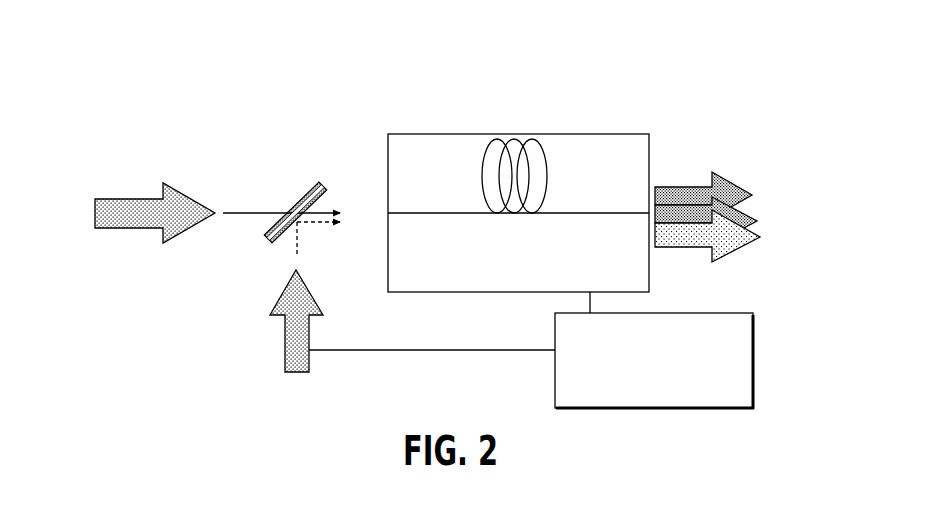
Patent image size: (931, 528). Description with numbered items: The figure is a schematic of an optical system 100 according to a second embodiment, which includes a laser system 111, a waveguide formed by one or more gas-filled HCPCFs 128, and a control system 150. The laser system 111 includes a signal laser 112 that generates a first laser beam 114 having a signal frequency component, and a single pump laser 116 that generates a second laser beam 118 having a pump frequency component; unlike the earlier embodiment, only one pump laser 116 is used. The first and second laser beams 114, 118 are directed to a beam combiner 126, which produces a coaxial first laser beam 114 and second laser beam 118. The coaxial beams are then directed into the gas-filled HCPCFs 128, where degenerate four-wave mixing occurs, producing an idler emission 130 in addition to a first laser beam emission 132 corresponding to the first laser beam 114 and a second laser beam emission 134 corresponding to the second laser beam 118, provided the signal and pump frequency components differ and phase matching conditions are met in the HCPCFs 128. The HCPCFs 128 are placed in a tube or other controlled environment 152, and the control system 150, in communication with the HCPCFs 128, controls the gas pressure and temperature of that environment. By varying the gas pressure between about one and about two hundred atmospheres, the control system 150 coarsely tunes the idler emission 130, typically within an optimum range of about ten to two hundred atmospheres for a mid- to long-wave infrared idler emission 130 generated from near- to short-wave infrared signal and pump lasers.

The optical system 100 is at (540, 64).
The laser system 111 is at (246, 104).
The signal laser 112 is at (285, 340).
The first laser beam 114 is at (298, 246).
The pump laser 116 is at (96, 212).
The second laser beam 118 is at (256, 212).
The beam combiner 126 is at (306, 198).
The gas-filled hollow-core photonic crystal fibers (waveguide) 128 is at (510, 172).
The idler emission 130 is at (752, 240).
The first laser beam emission 132 is at (735, 186).
The second laser beam emission 134 is at (740, 210).
The control system 150 is at (753, 356).
The controlled environment 152 is at (626, 133).